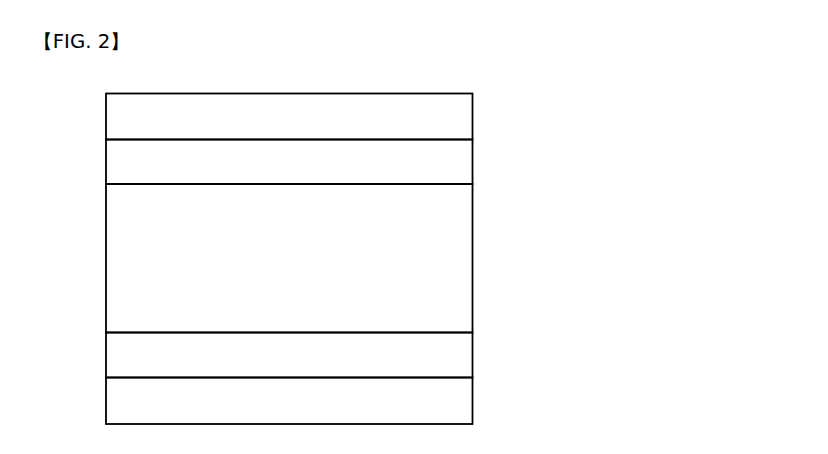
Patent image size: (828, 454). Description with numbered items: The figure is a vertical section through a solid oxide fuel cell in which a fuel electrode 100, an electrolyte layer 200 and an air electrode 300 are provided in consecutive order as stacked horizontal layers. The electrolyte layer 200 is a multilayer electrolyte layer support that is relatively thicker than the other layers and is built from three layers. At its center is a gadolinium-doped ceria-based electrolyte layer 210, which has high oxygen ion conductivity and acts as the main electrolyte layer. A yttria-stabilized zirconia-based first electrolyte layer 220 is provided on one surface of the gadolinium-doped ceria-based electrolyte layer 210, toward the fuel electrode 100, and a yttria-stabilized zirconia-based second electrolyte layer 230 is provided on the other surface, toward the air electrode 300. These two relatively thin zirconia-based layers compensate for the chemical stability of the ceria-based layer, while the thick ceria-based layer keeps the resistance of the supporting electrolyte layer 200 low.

The fuel electrode 100 is at (432, 118).
The electrolyte layer 200 is at (626, 150).
The gadolinium-doped ceria-based electrolyte layer 210 is at (359, 258).
The yttria-stabilized zirconia-based first electrolyte layer 220 is at (432, 118).
The yttria-stabilized zirconia-based second electrolyte layer 230 is at (359, 353).
The air electrode 300 is at (359, 401).